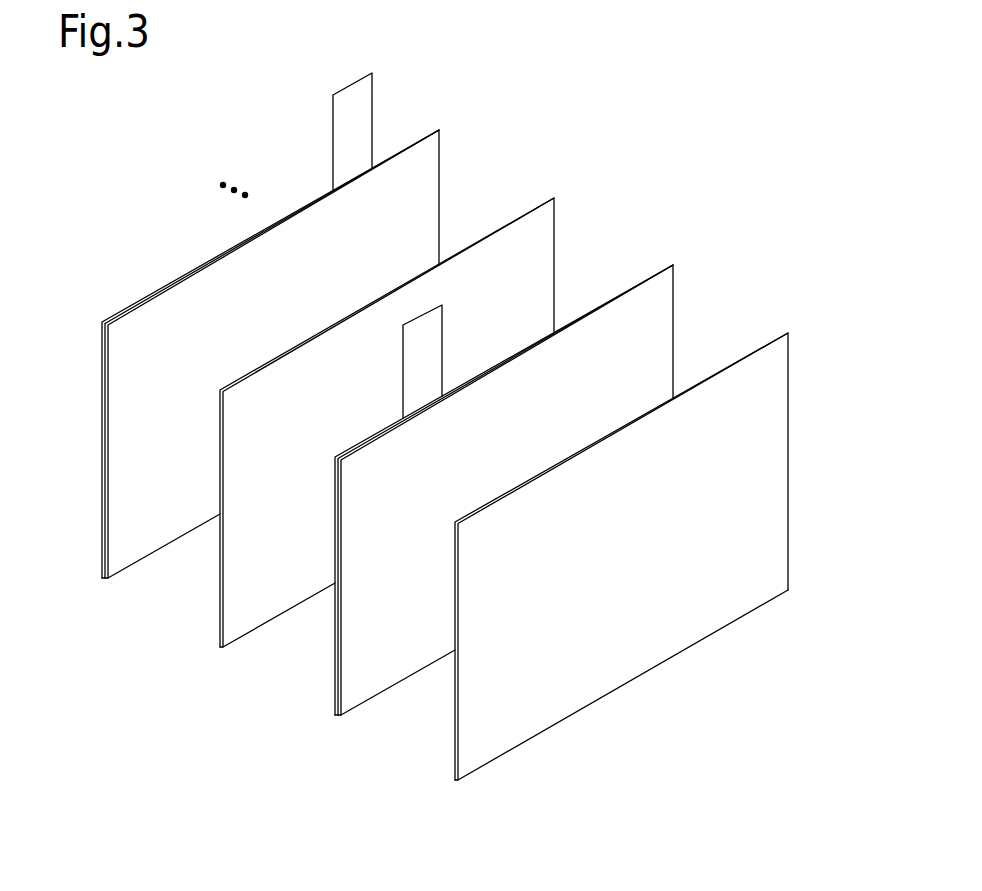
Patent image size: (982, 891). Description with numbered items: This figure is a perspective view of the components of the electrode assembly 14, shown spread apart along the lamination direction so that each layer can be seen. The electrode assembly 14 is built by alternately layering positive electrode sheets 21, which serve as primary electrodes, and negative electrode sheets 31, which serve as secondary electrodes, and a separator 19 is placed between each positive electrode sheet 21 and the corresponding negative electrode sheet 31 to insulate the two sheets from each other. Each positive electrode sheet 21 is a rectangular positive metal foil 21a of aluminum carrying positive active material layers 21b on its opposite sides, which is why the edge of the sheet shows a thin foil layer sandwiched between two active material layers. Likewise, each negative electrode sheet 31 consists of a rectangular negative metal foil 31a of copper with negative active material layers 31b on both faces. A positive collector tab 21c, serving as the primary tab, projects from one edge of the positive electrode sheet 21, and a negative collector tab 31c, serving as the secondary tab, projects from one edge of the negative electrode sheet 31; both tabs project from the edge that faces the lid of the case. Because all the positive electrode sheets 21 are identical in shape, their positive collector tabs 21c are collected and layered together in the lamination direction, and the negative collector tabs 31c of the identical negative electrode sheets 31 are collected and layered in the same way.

The electrode assembly 14 is at (714, 179).
The separator 19 is at (556, 243).
The positive electrode sheet 21 is at (335, 698).
The positive metal foil 21a is at (343, 655).
The positive active material layer 21b is at (330, 598).
The positive collector tab 21c is at (405, 363).
The negative electrode sheet 31 is at (102, 565).
The negative metal foil 31a is at (102, 520).
The negative active material layer 31b is at (102, 473).
The negative collector tab 31c is at (335, 130).